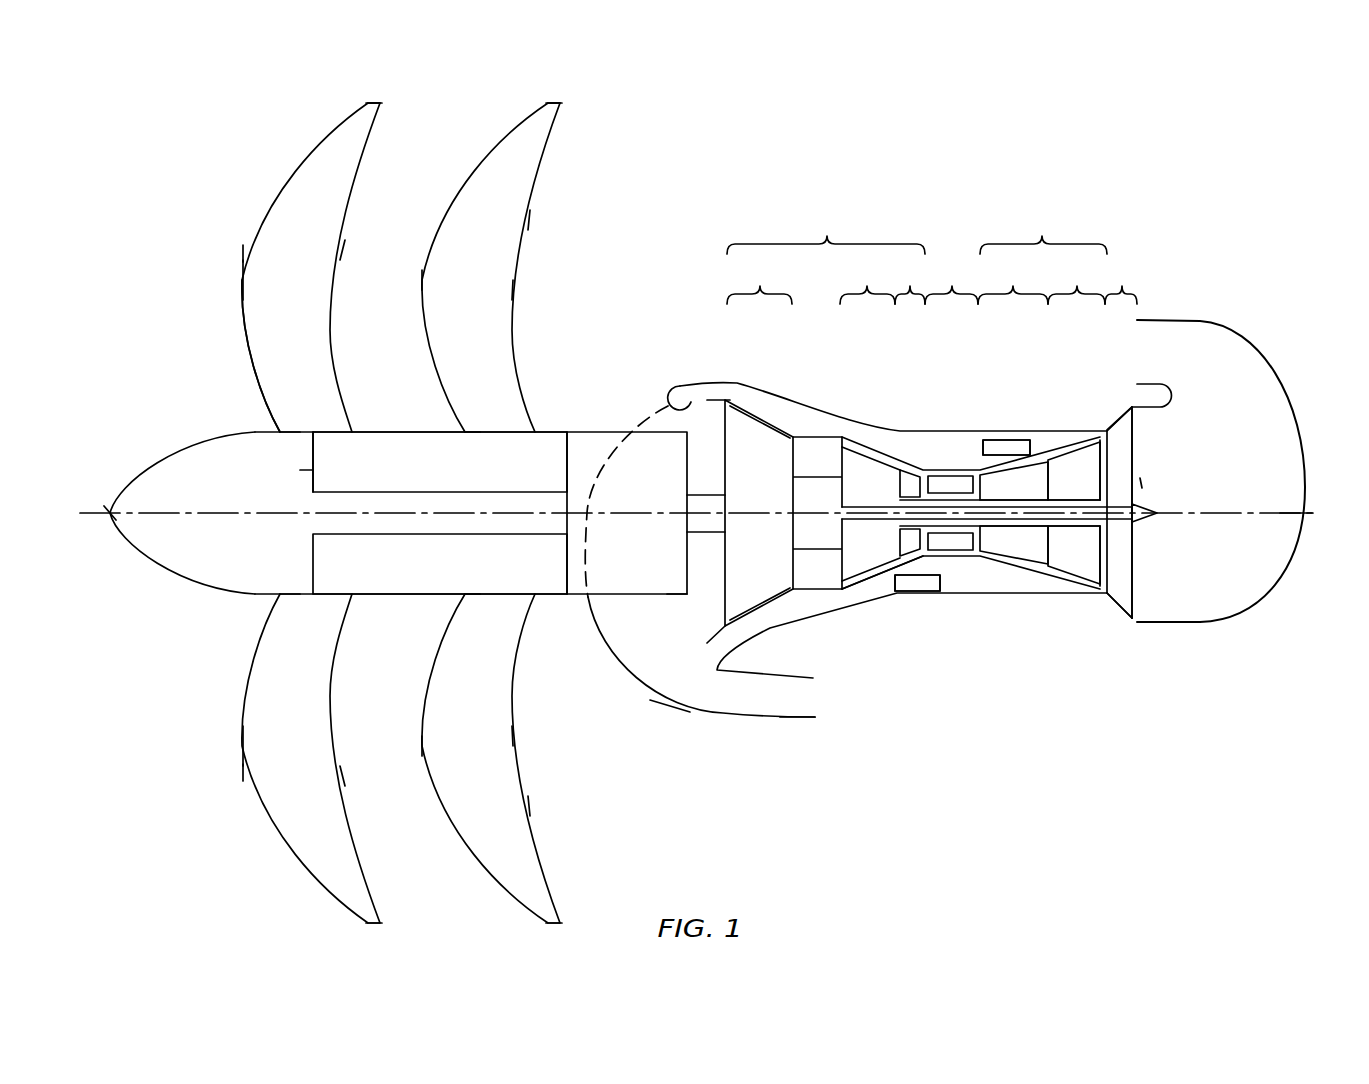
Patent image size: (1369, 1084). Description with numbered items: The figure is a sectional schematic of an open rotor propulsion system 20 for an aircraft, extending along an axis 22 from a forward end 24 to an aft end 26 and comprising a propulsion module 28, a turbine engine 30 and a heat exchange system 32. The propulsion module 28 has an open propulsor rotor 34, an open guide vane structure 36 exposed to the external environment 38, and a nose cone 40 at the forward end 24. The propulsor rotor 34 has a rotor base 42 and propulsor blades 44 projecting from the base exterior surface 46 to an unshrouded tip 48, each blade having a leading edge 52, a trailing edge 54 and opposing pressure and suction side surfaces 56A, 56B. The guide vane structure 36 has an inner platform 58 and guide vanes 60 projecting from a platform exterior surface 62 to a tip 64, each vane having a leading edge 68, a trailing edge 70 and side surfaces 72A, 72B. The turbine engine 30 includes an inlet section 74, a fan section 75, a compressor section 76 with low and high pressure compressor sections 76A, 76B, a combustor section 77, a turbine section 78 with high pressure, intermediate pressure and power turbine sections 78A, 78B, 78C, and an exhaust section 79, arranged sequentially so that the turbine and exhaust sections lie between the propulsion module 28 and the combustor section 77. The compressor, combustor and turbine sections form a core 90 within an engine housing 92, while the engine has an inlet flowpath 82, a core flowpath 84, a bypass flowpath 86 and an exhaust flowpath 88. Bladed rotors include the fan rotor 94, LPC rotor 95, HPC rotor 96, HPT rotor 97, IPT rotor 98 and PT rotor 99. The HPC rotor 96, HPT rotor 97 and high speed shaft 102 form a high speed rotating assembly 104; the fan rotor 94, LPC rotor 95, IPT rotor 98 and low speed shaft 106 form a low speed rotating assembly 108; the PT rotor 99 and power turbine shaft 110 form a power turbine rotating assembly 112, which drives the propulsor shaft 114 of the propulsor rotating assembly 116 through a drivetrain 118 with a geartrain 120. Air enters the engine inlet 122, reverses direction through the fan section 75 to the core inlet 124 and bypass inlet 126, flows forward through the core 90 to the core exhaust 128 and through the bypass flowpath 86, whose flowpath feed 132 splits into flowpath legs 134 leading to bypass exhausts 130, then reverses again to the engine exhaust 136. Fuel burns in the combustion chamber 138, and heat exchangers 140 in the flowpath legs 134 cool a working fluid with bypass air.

The propulsion system 20 is at (165, 135).
The axis 22 is at (100, 523).
The forward end 24 is at (107, 513).
The aft end 26 is at (1310, 513).
The propulsion module 28 is at (632, 108).
The turbine engine 30 is at (975, 655).
The heat exchange system 32 is at (1018, 425).
The propulsor rotor 34 is at (285, 155).
The guide vane structure 36 is at (500, 127).
The environment 38 is at (97, 238).
The nose cone 40 is at (165, 455).
The rotor base 42 is at (310, 470).
The propulsor blades 44 is at (240, 272).
The exterior surface 46 is at (290, 428).
The tip 48 is at (378, 103).
The leading edge 52 is at (245, 243).
The trailing edge 54 is at (345, 248).
The first blade exterior surface 56A is at (265, 287).
The second blade exterior surface 56B is at (265, 762).
The inner platform 58 is at (490, 437).
The guide vanes 60 is at (532, 217).
The exterior surface 62 is at (512, 430).
The tip 64 is at (558, 103).
The leading edge 68 is at (418, 280).
The trailing edge 70 is at (513, 290).
The first vane exterior surface 72A is at (448, 287).
The second vane exterior surface 72B is at (448, 762).
The inlet section 74 is at (1213, 313).
The fan section 75 is at (1121, 279).
The compressor section 76 is at (1043, 227).
The low pressure compressor section 76A is at (1076, 279).
The high pressure compressor section 76B is at (1013, 279).
The combustor section 77 is at (951, 279).
The turbine section 78 is at (826, 227).
The high pressure turbine section 78A is at (910, 279).
The intermediate pressure turbine section 78B is at (867, 279).
The power turbine section 78C is at (759, 279).
The exhaust section 79 is at (682, 742).
The inlet flowpath 82 is at (1207, 447).
The core flowpath 84 is at (806, 468).
The bypass flowpath 86 is at (928, 455).
The exhaust flowpath 88 is at (644, 669).
The core 90 is at (940, 622).
The engine housing 92 is at (805, 398).
The fan rotor 94 is at (1135, 565).
The LPC rotor 95 is at (1070, 565).
The HPC rotor 96 is at (1030, 555).
The HPT rotor 97 is at (893, 600).
The IPT rotor 98 is at (860, 605).
The PT rotor 99 is at (770, 607).
The high speed shaft 102 is at (960, 560).
The high speed rotating assembly 104 is at (1133, 548).
The low speed shaft 106 is at (1032, 495).
The low speed rotating assembly 108 is at (1142, 484).
The power turbine shaft 110 is at (700, 490).
The power turbine rotating assembly 112 is at (718, 568).
The propulsor shaft 114 is at (353, 490).
The propulsor rotating assembly 116 is at (300, 483).
The drivetrain 118 is at (615, 421).
The geartrain 120 is at (571, 457).
The airflow inlet 122 is at (1138, 333).
The airflow inlet 124 is at (1110, 572).
The airflow inlet 126 is at (1125, 600).
The core exhaust 128 is at (712, 600).
The bypass exhausts 130 is at (668, 400).
The flowpath feed 132 is at (1078, 465).
The flowpath legs 134 is at (830, 410).
The exhaust 136 is at (815, 700).
The combustion chamber 138 is at (955, 476).
The heat exchangers 140 is at (985, 438).